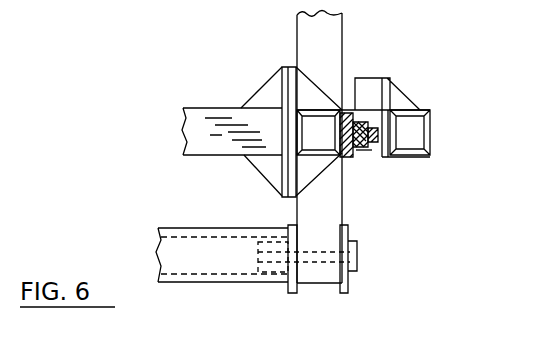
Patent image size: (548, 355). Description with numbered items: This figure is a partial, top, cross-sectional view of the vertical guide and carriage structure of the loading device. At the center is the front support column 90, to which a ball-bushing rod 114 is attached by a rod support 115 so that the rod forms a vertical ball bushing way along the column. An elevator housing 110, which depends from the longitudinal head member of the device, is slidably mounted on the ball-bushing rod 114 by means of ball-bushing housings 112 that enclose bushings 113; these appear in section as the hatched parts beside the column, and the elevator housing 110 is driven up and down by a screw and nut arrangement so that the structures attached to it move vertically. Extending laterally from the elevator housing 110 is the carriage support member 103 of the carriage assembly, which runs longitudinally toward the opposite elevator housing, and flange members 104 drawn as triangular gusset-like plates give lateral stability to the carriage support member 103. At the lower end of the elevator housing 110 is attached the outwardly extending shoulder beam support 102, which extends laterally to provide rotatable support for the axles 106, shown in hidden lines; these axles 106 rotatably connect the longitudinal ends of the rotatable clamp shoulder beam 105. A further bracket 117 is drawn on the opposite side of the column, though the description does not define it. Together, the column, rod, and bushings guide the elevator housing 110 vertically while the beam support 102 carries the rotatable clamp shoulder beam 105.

The front support column 90 is at (424, 155).
The shoulder beam support 102 is at (322, 278).
The carriage support member 103 is at (210, 147).
The flange members 104 is at (268, 95).
The clamp shoulder beam 105 is at (217, 283).
The axles 106 is at (258, 247).
The elevator housing 110 is at (307, 110).
The ball-bushing housings 112 is at (353, 152).
The bushings 113 is at (358, 152).
The ball-bushing rod 114 is at (364, 150).
The rod support 115 is at (370, 150).
The bracket 117 is at (372, 82).